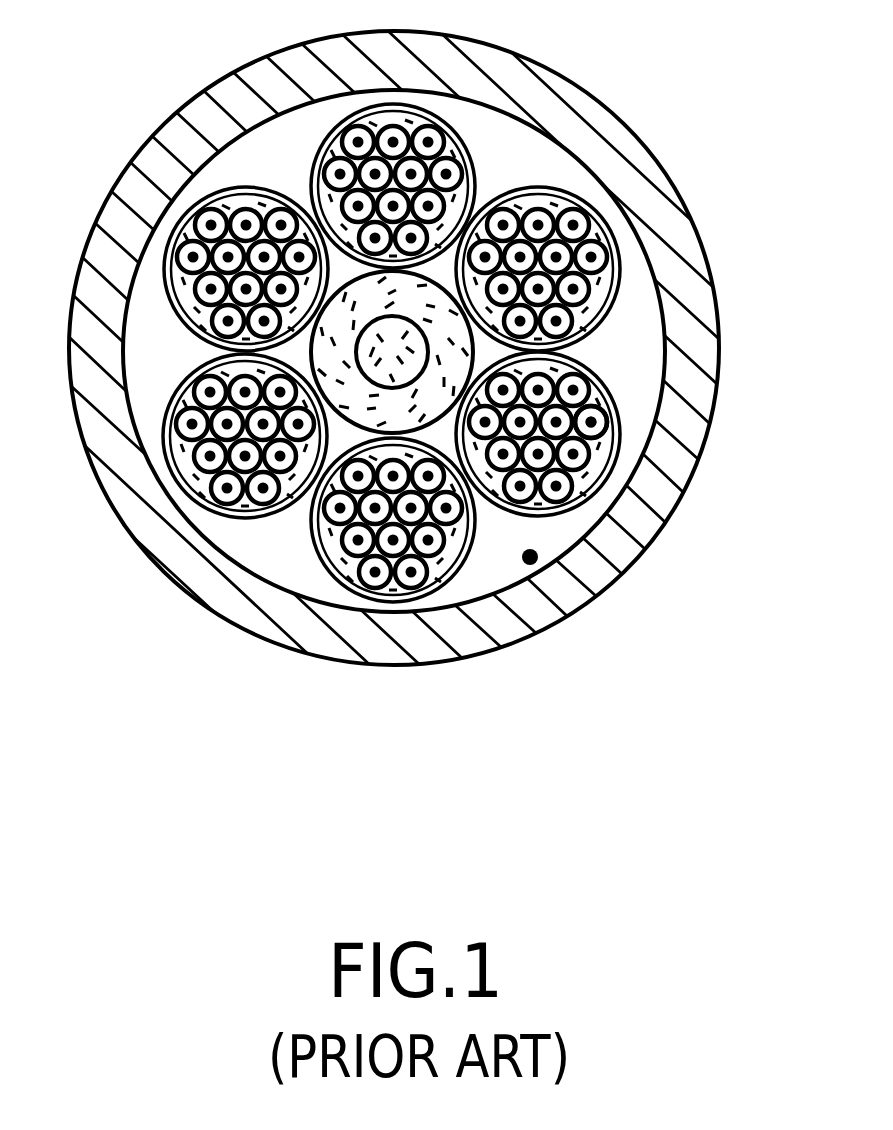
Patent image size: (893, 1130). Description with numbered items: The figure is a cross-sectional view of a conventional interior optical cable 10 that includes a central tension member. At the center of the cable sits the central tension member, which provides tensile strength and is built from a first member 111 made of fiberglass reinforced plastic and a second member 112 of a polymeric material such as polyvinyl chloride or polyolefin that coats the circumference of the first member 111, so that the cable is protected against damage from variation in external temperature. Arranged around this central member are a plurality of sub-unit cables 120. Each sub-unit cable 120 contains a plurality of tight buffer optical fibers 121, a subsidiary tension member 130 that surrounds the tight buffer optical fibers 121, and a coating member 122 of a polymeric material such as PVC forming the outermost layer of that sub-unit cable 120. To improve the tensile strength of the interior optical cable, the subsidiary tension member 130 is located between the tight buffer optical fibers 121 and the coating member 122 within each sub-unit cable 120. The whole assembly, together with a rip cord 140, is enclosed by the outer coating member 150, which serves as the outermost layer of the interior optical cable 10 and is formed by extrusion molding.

The optical fiber cable 10 is at (350, 268).
The first member 111 is at (413, 333).
The second member 112 is at (473, 372).
The sub-unit cable 120 is at (493, 512).
The tight buffer optical fiber 121 is at (622, 441).
The coating member 122 is at (592, 446).
The subsidiary tension member 130 is at (615, 289).
The rip cord 140 is at (538, 557).
The outer coating member 150 is at (577, 595).